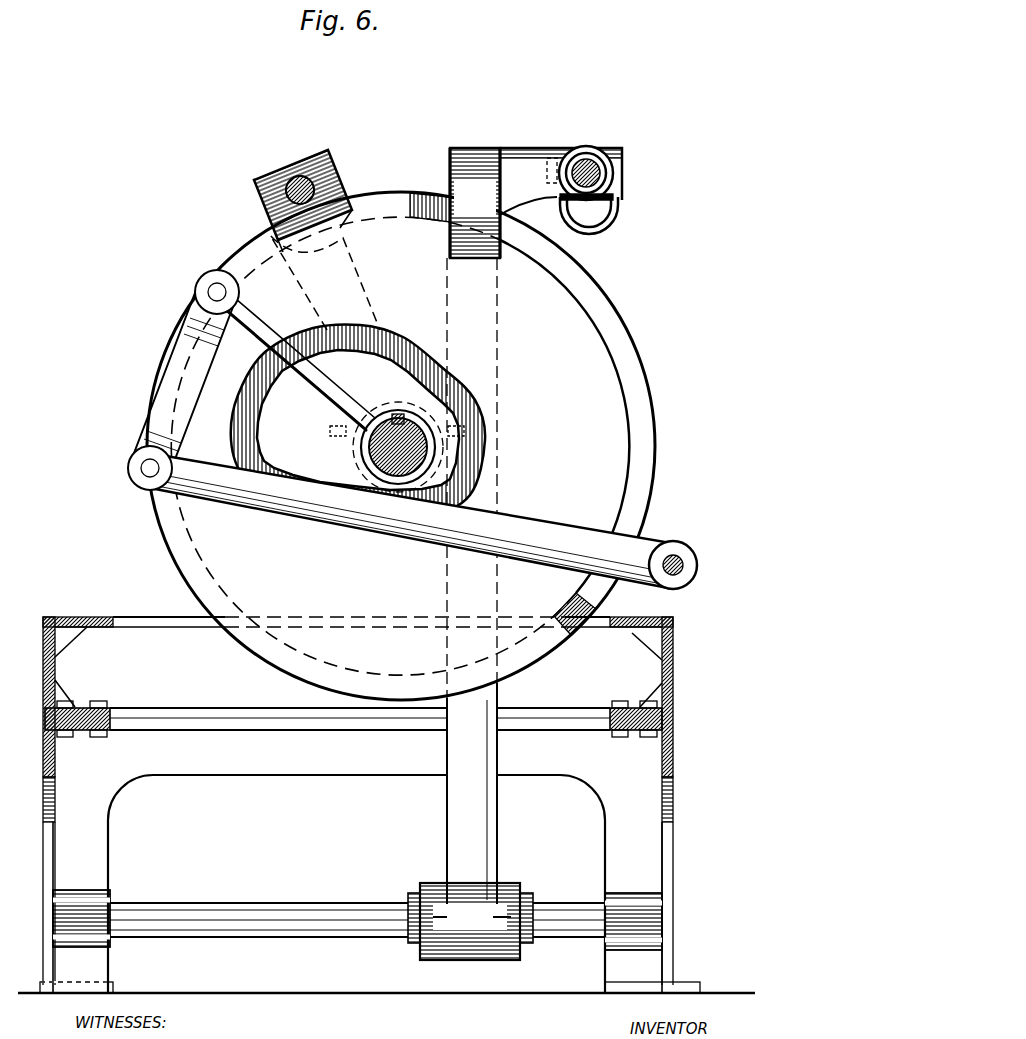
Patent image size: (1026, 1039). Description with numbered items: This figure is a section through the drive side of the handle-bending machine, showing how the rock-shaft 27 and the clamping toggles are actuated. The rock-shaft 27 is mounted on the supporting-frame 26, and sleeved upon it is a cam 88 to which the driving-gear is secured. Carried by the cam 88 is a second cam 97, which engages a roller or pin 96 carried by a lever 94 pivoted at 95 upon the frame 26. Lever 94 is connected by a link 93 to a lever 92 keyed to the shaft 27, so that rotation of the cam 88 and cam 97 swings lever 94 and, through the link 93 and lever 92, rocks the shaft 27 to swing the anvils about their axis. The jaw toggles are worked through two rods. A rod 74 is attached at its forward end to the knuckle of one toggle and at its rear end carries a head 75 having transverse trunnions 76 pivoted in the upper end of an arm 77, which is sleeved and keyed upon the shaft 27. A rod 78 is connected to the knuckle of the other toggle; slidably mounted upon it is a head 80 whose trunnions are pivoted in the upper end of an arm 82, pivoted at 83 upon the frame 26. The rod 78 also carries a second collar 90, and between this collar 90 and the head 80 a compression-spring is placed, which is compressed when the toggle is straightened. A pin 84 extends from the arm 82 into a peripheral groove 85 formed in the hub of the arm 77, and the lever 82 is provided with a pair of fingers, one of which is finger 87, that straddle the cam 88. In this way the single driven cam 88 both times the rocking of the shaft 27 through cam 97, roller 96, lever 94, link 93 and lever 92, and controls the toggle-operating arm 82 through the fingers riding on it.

The supporting-frame 26 is at (362, 770).
The rock-shaft 27 is at (380, 477).
The rod 74 is at (312, 193).
The head 75 is at (287, 172).
The transverse trunnions 76 is at (290, 227).
The arm 77 is at (352, 296).
The rod 78 is at (589, 162).
The head 80 is at (606, 158).
The arm 82 is at (472, 587).
The pivot 83 is at (535, 907).
The pin 84 is at (473, 483).
The peripheral groove 85 is at (410, 469).
The finger 87 is at (475, 203).
The cam 88 is at (395, 272).
The second collar 90 is at (610, 180).
The lever 92 is at (275, 326).
The link 93 is at (187, 370).
The lever 94 is at (251, 493).
The pivot 95 is at (676, 570).
The roller or pin 96 is at (385, 525).
The cam 97 is at (468, 417).